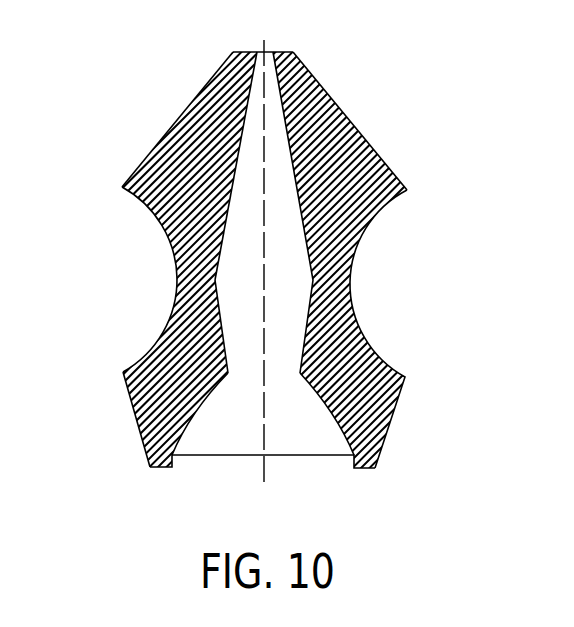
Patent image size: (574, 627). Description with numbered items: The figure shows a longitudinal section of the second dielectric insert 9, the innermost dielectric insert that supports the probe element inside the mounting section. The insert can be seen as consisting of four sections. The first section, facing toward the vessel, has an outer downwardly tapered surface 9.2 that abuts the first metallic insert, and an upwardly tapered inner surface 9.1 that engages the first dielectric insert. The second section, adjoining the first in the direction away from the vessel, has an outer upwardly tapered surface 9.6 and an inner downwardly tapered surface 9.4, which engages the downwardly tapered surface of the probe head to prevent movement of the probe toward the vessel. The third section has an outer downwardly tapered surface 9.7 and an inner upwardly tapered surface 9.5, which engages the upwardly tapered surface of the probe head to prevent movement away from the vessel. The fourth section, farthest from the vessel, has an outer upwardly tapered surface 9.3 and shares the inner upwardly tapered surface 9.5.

The second dielectric insert 9 is at (287, 287).
The inner surface 9.1 is at (318, 413).
The outer downwardly tapered surface 9.2 is at (141, 423).
The outer upwardly tapered surface 9.3 is at (343, 108).
The inner downwardly tapered surface 9.4 is at (222, 354).
The inner upwardly tapered surface 9.5 is at (222, 229).
The outer upwardly tapered surface 9.6 is at (370, 327).
The outer downwardly tapered surface 9.7 is at (373, 230).